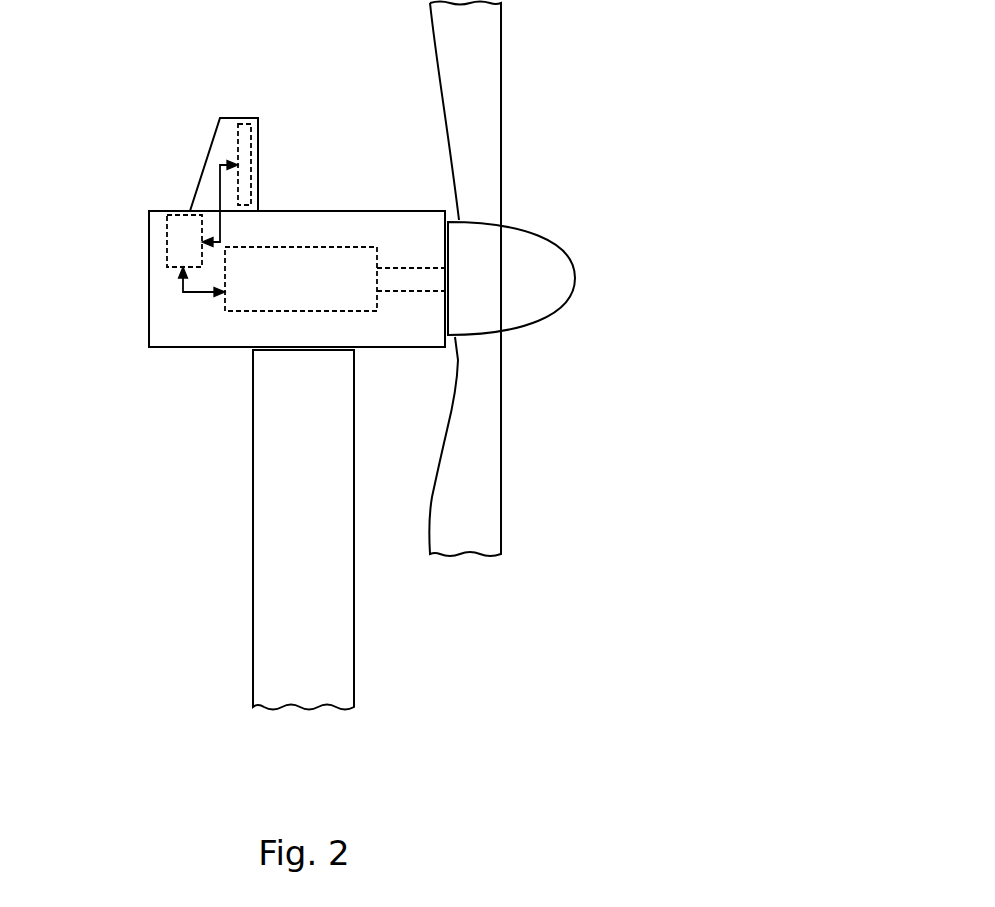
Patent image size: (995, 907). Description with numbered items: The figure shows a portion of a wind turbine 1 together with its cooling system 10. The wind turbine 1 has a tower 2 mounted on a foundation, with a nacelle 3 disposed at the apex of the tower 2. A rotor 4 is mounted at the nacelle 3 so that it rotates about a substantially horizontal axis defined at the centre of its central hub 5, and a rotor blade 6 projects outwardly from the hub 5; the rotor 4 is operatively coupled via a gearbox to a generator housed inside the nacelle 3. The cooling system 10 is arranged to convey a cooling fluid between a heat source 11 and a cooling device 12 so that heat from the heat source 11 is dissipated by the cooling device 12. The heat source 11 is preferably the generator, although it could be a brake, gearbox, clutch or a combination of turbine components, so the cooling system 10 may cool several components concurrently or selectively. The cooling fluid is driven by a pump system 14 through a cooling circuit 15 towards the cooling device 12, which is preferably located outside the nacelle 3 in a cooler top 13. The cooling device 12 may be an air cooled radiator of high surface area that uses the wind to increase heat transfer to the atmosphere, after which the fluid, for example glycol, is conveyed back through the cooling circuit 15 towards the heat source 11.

The wind turbine 1 is at (576, 138).
The tower 2 is at (265, 593).
The nacelle 3 is at (208, 348).
The rotor 4 is at (363, 279).
The central hub 5 is at (543, 253).
The rotor blade 6 is at (483, 530).
The cooling system 10 is at (235, 260).
The heat source 11 is at (320, 265).
The cooling device 12 is at (244, 140).
The cooler top 13 is at (213, 129).
The pump system 14 is at (185, 243).
The cooling circuit 15 is at (220, 193).